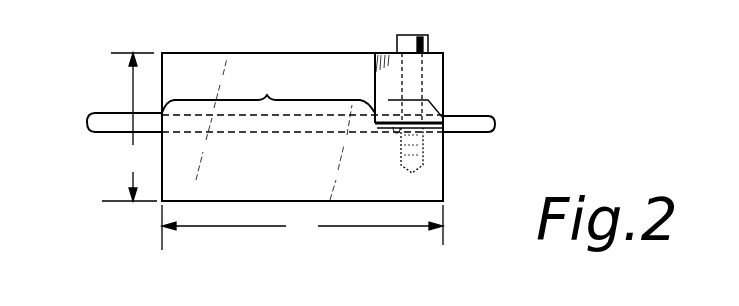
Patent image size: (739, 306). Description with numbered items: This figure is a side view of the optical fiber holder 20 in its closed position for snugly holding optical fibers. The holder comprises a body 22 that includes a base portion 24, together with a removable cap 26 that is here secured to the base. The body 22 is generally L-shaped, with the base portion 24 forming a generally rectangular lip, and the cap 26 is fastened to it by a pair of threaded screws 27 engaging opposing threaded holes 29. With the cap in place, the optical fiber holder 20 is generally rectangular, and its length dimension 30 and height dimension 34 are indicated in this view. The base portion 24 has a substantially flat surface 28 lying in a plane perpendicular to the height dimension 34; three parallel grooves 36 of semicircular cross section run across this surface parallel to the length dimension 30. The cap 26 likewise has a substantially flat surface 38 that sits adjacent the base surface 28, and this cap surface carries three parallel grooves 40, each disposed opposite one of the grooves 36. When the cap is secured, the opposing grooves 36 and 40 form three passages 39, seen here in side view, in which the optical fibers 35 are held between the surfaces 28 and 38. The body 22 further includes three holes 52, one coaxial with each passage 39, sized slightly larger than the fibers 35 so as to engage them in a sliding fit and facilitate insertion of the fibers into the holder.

The optical fiber holder 20 is at (113, 20).
The body 22 is at (250, 53).
The base portion 24 is at (443, 196).
The removable cap 26 is at (443, 62).
The threaded screws 27 is at (428, 42).
The flat surface of base portion 28 is at (377, 128).
The threaded holes 29 is at (422, 162).
The length dimension 30 is at (302, 227).
The height dimension 34 is at (129, 127).
The optical fibers 35 is at (100, 112).
The grooves of base surface 36 is at (448, 128).
The flat surface of cap 38 is at (390, 118).
The passages 39 is at (400, 100).
The grooves of cap surface 40 is at (443, 118).
The holes 52 is at (268, 91).